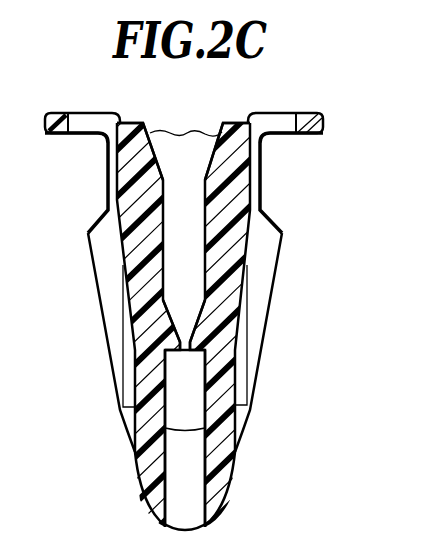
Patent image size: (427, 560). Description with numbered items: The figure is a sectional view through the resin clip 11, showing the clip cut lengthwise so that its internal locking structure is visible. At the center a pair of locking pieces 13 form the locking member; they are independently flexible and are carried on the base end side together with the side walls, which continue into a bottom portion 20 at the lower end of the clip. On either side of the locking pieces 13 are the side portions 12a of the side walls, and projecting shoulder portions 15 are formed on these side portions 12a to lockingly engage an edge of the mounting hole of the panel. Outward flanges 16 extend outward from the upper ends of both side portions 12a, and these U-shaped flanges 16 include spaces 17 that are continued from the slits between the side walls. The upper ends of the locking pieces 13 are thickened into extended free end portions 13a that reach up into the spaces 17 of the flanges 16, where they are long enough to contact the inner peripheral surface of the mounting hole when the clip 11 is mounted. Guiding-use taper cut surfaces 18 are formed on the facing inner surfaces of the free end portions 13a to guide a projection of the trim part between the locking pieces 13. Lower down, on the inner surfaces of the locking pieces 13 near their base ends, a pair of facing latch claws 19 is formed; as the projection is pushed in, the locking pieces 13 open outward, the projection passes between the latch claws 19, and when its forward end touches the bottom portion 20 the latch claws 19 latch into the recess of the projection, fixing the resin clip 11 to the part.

The resin clip 11 is at (307, 93).
The side portions 12a is at (108, 302).
The locking pieces 13 is at (135, 256).
The extended free end portions 13a is at (130, 157).
The projecting shoulder portions 15 is at (97, 217).
The outward flanges 16 is at (53, 112).
The spaces 17 is at (85, 122).
The guiding-use taper cut surfaces 18 is at (187, 132).
The latch claws 19 is at (178, 345).
The bottom portion 20 is at (207, 420).